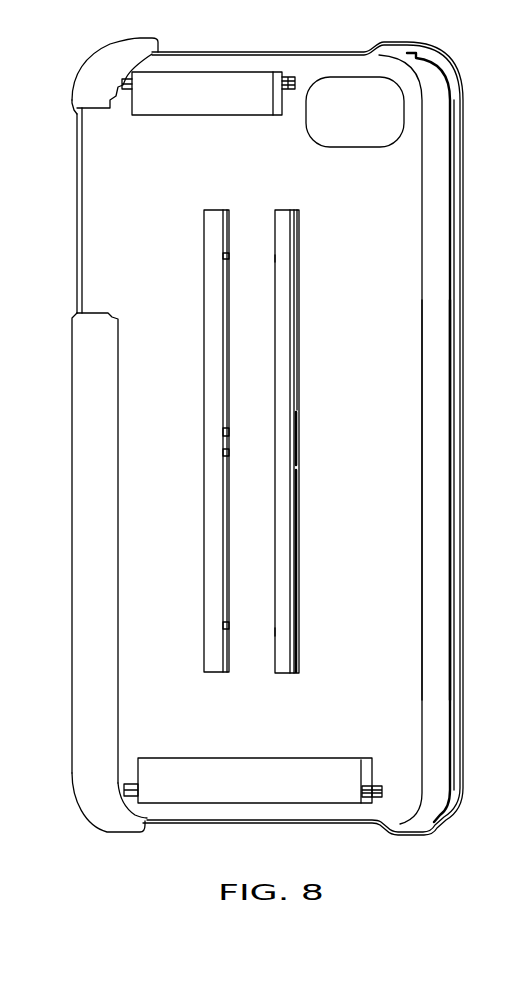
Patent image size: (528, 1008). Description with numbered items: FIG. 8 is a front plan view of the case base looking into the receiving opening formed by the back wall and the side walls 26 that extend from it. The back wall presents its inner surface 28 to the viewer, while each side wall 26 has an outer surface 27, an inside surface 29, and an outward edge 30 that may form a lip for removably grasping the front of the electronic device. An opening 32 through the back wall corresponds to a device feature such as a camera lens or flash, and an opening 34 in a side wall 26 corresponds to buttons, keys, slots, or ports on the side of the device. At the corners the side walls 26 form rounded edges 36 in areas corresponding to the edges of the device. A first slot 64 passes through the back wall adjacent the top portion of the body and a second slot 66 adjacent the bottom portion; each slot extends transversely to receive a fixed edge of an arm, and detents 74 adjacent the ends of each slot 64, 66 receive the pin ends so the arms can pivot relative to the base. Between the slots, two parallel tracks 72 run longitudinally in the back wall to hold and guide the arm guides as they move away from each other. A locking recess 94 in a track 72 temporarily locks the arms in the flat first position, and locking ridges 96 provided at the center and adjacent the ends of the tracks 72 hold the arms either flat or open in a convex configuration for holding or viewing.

The side wall 26 is at (468, 258).
The outer surface 27 is at (80, 598).
The inner surface 28 is at (387, 272).
The inside surface 29 is at (436, 364).
The outward edge 30 is at (452, 553).
The opening 32 is at (405, 110).
The opening 34 is at (80, 215).
The edge 36 is at (95, 48).
The first slot 64 is at (262, 72).
The second slot 66 is at (346, 806).
The track 72 is at (276, 545).
The detent 74 is at (136, 86).
The locking recess 94 is at (297, 440).
The locking ridge 96 is at (272, 254).